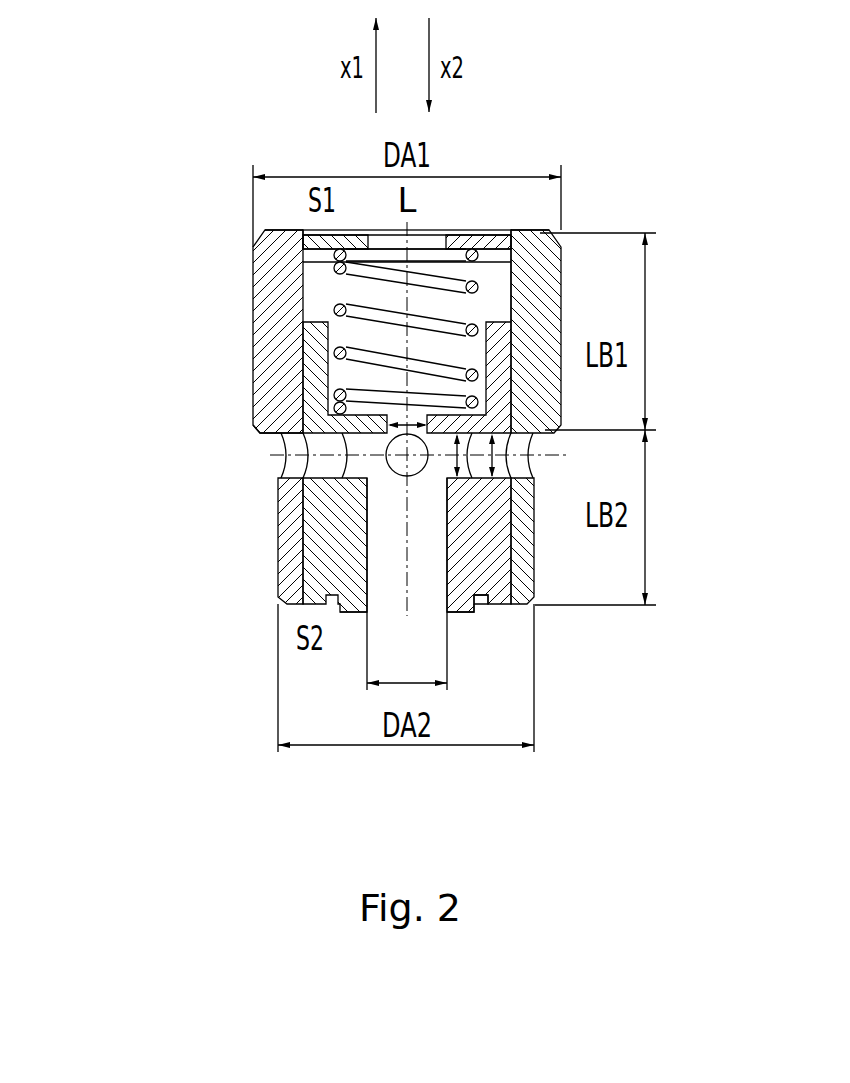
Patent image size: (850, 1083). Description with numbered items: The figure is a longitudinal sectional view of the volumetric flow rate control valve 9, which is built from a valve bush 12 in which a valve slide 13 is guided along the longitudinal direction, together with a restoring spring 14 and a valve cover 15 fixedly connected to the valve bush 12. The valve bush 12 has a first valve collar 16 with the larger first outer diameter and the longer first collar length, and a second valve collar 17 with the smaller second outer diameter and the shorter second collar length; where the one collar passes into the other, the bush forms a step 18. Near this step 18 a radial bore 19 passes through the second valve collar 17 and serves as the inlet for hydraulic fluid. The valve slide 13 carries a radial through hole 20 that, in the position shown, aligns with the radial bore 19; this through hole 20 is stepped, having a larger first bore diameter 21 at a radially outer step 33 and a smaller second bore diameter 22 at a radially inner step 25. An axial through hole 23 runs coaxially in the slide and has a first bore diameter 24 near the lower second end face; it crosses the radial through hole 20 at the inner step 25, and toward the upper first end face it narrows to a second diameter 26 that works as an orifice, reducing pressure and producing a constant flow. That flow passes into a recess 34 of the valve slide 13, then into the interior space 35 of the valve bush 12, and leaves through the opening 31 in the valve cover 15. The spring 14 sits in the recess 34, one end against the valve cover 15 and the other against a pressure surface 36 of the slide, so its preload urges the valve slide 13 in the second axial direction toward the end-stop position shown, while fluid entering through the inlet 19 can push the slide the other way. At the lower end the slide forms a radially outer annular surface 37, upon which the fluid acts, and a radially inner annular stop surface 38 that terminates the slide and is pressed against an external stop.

The volumetric flow rate control valve 9 is at (237, 217).
The valve bush 12 is at (245, 310).
The valve slide 13 is at (322, 572).
The spring 14 is at (513, 272).
The valve cover 15 is at (528, 225).
The first valve collar 16 is at (275, 395).
The second valve collar 17 is at (292, 553).
The step 18 is at (257, 438).
The radial bore 19 is at (533, 470).
The radial through hole 20 is at (513, 453).
The first bore diameter 21 is at (520, 540).
The second bore diameter 22 is at (513, 563).
The axial through hole 23 is at (390, 578).
The first bore diameter 24 is at (407, 651).
The inner step 25 is at (367, 480).
The second diameter 26 is at (367, 607).
The opening 31 is at (425, 245).
The outer step 33 is at (447, 525).
The recess 34 is at (347, 377).
The interior space 35 is at (320, 289).
The pressure surface 36 is at (433, 410).
The annular surface 37 is at (480, 604).
The stop surface 38 is at (458, 615).